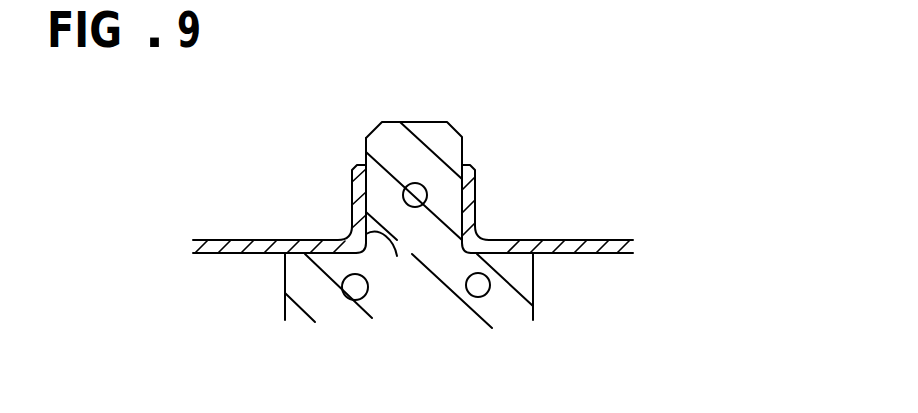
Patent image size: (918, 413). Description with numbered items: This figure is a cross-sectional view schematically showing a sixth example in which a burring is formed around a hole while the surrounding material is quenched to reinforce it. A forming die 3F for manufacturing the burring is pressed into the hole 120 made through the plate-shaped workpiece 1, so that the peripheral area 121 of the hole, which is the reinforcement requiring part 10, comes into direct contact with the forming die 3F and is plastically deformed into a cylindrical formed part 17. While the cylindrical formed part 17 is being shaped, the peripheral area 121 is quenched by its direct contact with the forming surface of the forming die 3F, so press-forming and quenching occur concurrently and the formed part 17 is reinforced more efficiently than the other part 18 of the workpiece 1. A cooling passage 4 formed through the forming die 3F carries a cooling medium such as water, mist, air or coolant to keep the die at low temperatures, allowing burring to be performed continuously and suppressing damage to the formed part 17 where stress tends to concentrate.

The workpiece 1 is at (475, 232).
The forming die 3F is at (422, 225).
The cooling passage 4 is at (416, 192).
The reinforcement requiring part 10 is at (314, 240).
The cylindrical formed part 17 is at (473, 184).
The other part 18 is at (218, 254).
The hole 120 is at (397, 256).
The peripheral area 121 is at (481, 203).